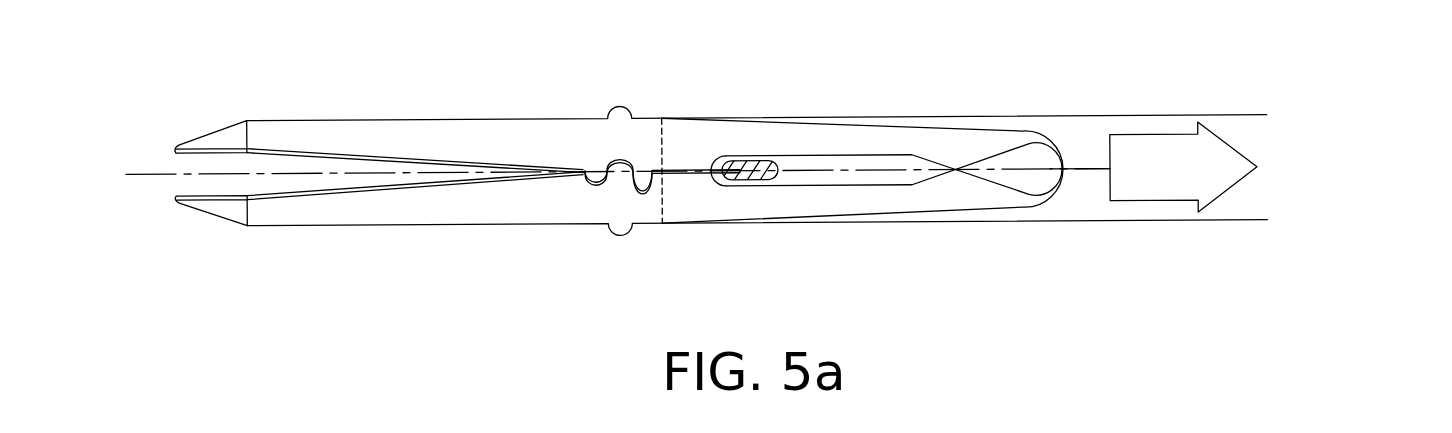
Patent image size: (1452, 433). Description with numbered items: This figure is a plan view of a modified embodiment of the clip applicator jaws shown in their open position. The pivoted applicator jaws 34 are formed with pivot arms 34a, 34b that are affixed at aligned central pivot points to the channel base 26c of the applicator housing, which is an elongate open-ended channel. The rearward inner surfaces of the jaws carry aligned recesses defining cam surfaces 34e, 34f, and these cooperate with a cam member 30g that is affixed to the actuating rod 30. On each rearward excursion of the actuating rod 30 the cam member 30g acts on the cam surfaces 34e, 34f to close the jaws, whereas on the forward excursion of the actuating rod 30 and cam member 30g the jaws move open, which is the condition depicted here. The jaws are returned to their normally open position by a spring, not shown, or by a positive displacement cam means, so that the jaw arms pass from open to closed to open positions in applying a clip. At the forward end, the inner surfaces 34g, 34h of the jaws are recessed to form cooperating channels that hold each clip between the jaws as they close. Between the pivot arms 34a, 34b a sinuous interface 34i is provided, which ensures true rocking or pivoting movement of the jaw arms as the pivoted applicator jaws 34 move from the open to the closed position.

The pivoted applicator jaws 34 is at (503, 66).
The pivot arm 34a is at (345, 128).
The pivot arm 34b is at (355, 211).
The forward inner surface 34g is at (181, 156).
The forward inner surface 34h is at (182, 187).
The sinuous interface 34i is at (645, 188).
The cam member 30g is at (751, 172).
The cam surface 34e is at (887, 156).
The cam surface 34f is at (889, 185).
The actuating rod 30 is at (1153, 118).
The channel base 26c is at (1078, 200).